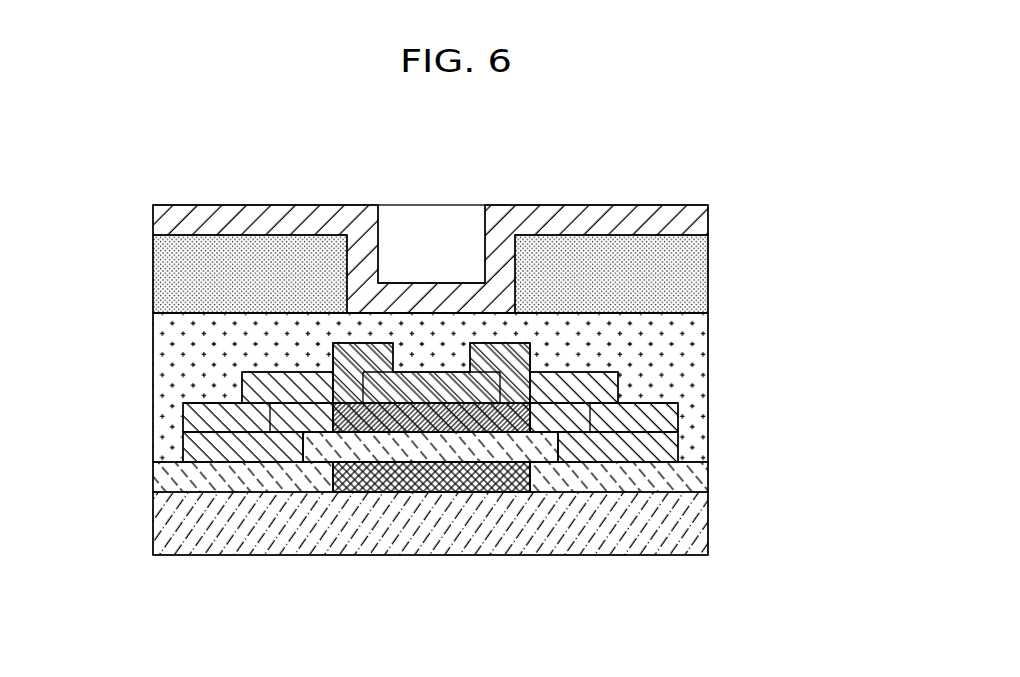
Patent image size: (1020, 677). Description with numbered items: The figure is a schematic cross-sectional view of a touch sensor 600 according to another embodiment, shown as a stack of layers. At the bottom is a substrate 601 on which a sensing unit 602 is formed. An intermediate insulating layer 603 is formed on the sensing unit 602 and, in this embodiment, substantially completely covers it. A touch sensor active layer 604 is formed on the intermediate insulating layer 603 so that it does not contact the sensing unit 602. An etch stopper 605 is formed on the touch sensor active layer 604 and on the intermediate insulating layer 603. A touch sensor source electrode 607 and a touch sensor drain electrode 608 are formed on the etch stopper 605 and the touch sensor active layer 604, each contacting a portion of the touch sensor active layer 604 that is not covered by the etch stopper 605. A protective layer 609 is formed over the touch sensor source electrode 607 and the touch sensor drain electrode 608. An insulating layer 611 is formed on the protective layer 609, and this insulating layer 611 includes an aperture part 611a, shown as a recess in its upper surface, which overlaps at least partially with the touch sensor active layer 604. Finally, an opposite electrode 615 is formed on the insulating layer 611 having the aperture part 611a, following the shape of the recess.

The touch sensor 600 is at (642, 159).
The substrate 601 is at (697, 523).
The sensing unit 602 is at (475, 480).
The intermediate insulating layer 603 is at (697, 481).
The touch sensor active layer 604 is at (425, 420).
The etch stopper 605 is at (186, 452).
The touch sensor source electrode 607 is at (186, 418).
The touch sensor drain electrode 608 is at (668, 419).
The protective layer 609 is at (697, 349).
The insulating layer 611 is at (167, 274).
The aperture part 611a is at (350, 263).
The opposite electrode 615 is at (697, 222).